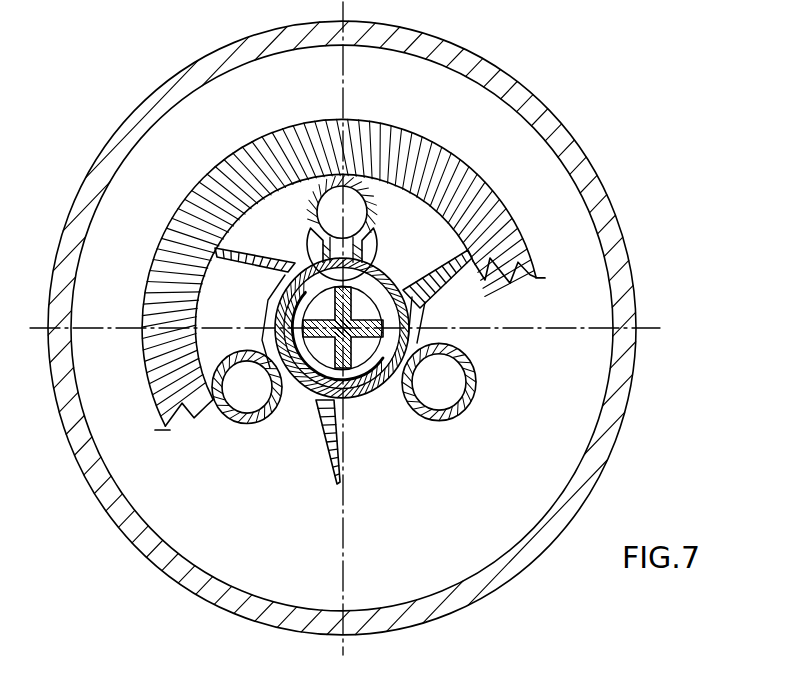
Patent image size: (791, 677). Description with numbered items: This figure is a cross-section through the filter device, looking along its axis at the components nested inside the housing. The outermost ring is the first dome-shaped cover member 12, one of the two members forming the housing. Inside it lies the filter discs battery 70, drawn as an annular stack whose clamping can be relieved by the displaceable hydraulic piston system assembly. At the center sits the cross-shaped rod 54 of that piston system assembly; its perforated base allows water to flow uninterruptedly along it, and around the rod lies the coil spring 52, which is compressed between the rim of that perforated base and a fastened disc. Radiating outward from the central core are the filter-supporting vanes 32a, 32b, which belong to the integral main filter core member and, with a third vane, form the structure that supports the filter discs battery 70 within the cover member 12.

The dome-shaped cover member 12 is at (603, 222).
The filter discs battery 70 is at (428, 141).
The cross-shaped rod 54 is at (360, 310).
The coil spring 52 is at (353, 412).
The filter-supporting vane 32a is at (450, 283).
The filter-supporting vane 32b is at (323, 443).